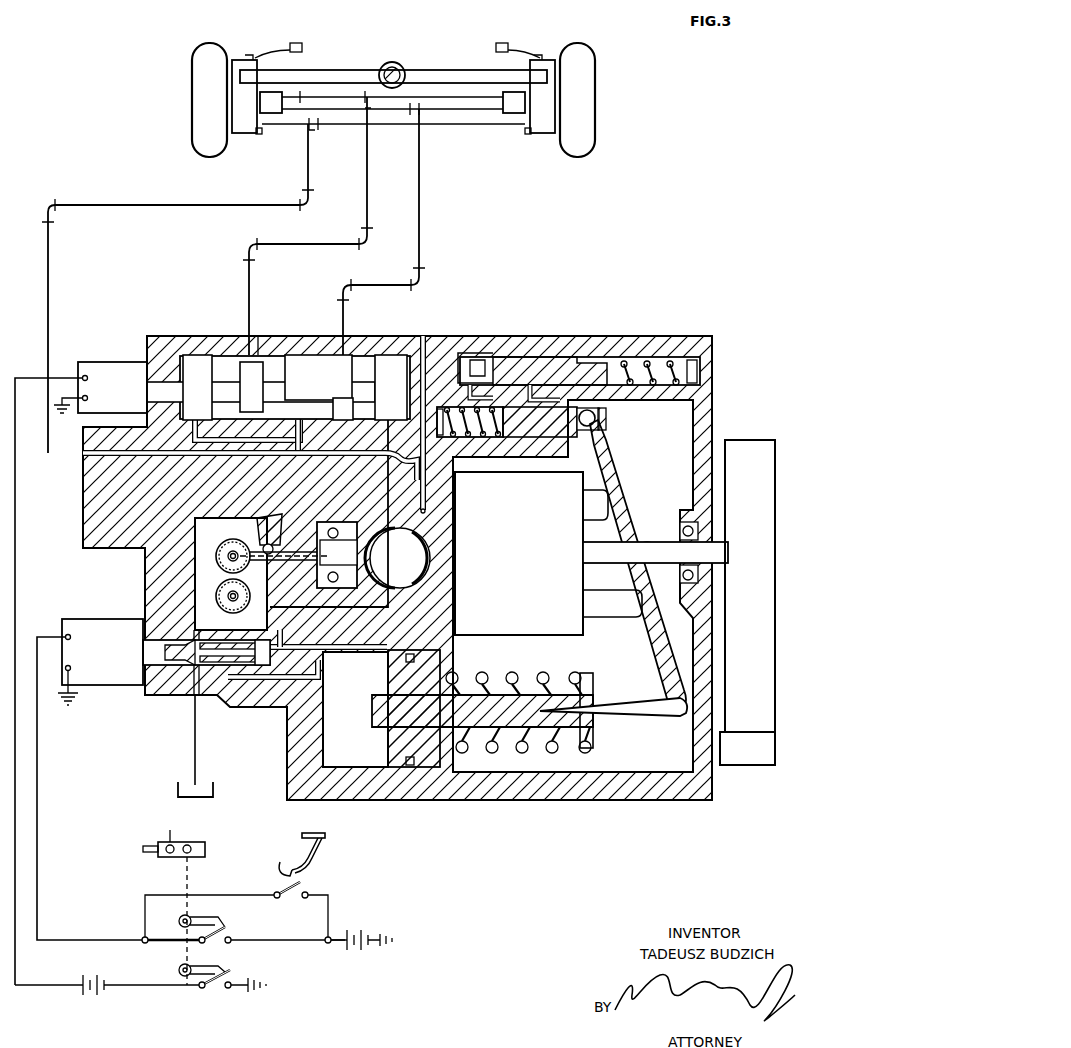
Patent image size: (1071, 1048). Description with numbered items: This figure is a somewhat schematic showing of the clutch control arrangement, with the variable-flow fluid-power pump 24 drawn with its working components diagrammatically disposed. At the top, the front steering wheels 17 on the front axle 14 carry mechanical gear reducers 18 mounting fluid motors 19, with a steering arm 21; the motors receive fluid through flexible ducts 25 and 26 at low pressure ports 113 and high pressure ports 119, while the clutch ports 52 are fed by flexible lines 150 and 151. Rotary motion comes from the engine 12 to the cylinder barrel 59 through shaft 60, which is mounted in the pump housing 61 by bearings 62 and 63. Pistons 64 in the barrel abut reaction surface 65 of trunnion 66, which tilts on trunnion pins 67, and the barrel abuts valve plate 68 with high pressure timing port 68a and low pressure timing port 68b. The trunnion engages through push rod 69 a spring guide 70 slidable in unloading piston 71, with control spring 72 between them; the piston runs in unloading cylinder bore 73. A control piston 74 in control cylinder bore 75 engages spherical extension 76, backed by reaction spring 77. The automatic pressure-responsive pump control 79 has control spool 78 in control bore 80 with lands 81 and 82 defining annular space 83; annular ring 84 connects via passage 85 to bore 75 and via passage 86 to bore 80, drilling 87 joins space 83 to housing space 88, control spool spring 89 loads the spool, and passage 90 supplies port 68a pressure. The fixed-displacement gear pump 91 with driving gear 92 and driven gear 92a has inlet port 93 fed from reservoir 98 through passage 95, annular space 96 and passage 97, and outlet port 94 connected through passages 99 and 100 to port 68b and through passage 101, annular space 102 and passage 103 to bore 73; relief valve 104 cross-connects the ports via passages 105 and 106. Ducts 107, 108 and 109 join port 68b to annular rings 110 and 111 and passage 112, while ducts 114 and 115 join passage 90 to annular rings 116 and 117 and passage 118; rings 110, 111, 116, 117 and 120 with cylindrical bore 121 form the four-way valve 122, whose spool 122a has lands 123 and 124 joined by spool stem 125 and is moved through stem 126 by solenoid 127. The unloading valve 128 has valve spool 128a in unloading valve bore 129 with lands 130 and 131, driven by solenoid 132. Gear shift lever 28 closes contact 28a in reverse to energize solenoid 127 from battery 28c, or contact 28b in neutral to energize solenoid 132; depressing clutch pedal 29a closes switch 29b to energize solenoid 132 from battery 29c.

The engine 12 is at (747, 602).
The front axle 14 is at (380, 66).
The front steering wheels 17 is at (192, 80).
The mechanical gear reducer 18 is at (393, 94).
The fluid motor 19 is at (392, 102).
The steering arm 21 is at (298, 43).
The variable-flow fluid-power pump 24 is at (732, 400).
The flexible duct 25 is at (367, 190).
The flexible duct 26 is at (419, 205).
The gear shift lever 28 is at (172, 832).
The contact 28a is at (232, 976).
The contact 28b is at (232, 930).
The battery 28c is at (100, 980).
The clutch pedal 29a is at (318, 855).
The switch 29b is at (306, 886).
The battery 29c is at (360, 933).
The clutch ports 52 is at (258, 134).
The cylinder barrel 59 is at (519, 553).
The shaft 60 is at (725, 550).
The pump housing 61 is at (655, 790).
The bearing 62 is at (705, 580).
The bearing 63 is at (333, 524).
The pistons 64 is at (625, 617).
The reaction surface 65 is at (662, 642).
The trunnion 66 is at (625, 495).
The trunnion pins 67 is at (650, 542).
The valve plate 68 is at (420, 619).
The high pressure timing port 68a is at (380, 540).
The low pressure timing port 68b is at (375, 560).
The push rod 69 is at (660, 712).
The spring guide 70 is at (594, 682).
The unloading piston 71 is at (414, 708).
The control spring 72 is at (578, 674).
The unloading cylinder bore 73 is at (355, 709).
The control piston 74 is at (540, 422).
The control cylinder bore 75 is at (500, 416).
The spherical extension 76 is at (600, 422).
The reaction spring 77 is at (448, 437).
The control spool 78 is at (548, 357).
The automatic pressure-responsive pump control 79 is at (620, 360).
The control bore 80 is at (658, 358).
The land 81 is at (580, 358).
The land 82 is at (468, 353).
The annular space 83 is at (520, 357).
The annular ring 84 is at (494, 355).
The passage 85 is at (490, 397).
The passage 86 is at (600, 362).
The drilling 87 is at (565, 402).
The space 88 is at (675, 432).
The control spool spring 89 is at (690, 358).
The passage 90 is at (424, 512).
The fixed-displacement gear pump 91 is at (210, 627).
The driving gear 92 is at (215, 556).
The driven gear 92a is at (215, 596).
The inlet port 93 is at (200, 576).
The outlet port 94 is at (268, 570).
The passage 95 is at (200, 611).
The annular space 96 is at (190, 672).
The passage 97 is at (196, 752).
The reservoir 98 is at (210, 790).
The passage 99 is at (268, 595).
The passage 100 is at (350, 612).
The passage 101 is at (268, 630).
The annular space 102 is at (210, 662).
The passage 103 is at (308, 680).
The relief valve 104 is at (290, 508).
The passage 105 is at (276, 550).
The passage 106 is at (238, 518).
The duct 107 is at (378, 486).
The duct 108 is at (248, 425).
The duct 109 is at (192, 430).
The annular ring 110 is at (188, 340).
The annular ring 111 is at (240, 342).
The passage 112 is at (258, 335).
The low pressure ports 113 is at (286, 97).
The duct 114 is at (178, 455).
The duct 115 is at (298, 432).
The annular ring 116 is at (300, 345).
The annular ring 117 is at (328, 345).
The passage 118 is at (345, 345).
The high pressure ports 119 is at (286, 124).
The annular ring 120 is at (402, 345).
The cylindrical bore 121 is at (215, 342).
The four-way valve 122 is at (147, 395).
The spool 122a is at (323, 387).
The land 123 is at (285, 342).
The land 124 is at (388, 348).
The spool stem 125 is at (322, 345).
The stem 126 is at (198, 387).
The solenoid 127 is at (81, 673).
The unloading valve 128 is at (140, 661).
The valve spool 128a is at (148, 640).
The unloading valve bore 129 is at (275, 645).
The land 130 is at (143, 636).
The land 131 is at (272, 660).
The solenoid 132 is at (90, 779).
The flexible line 150 is at (220, 205).
The flexible line 151 is at (347, 124).